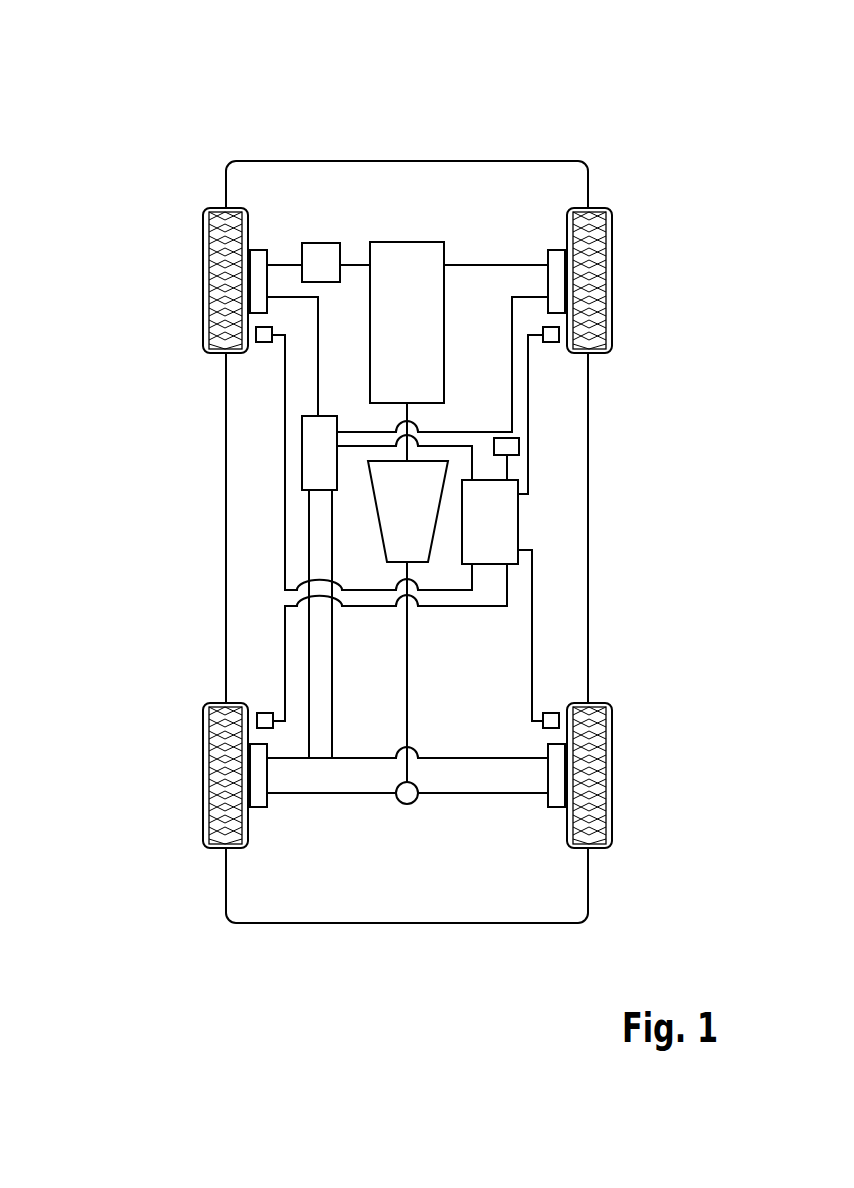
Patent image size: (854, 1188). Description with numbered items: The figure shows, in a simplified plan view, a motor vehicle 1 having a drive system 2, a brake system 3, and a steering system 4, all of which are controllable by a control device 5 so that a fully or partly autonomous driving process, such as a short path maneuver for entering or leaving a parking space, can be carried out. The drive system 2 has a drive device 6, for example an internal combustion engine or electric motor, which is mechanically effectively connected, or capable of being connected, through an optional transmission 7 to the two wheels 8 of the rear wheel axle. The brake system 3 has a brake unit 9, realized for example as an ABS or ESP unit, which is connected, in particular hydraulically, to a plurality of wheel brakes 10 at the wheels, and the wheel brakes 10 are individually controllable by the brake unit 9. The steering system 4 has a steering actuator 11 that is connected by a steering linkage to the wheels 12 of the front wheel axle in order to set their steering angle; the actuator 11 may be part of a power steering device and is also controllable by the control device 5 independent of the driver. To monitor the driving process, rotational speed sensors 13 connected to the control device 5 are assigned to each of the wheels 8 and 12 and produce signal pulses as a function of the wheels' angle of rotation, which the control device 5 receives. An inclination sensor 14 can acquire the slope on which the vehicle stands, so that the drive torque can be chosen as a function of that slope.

The motor vehicle 1 is at (124, 100).
The drive system 2 is at (466, 228).
The brake system 3 is at (268, 487).
The steering system 4 is at (355, 213).
The control device 5 is at (503, 520).
The drive device 6 is at (425, 350).
The transmission 7 is at (397, 507).
The wheels 8 is at (222, 765).
The brake unit 9 is at (315, 447).
The wheel brakes 10 is at (259, 265).
The steering actuator 11 is at (321, 265).
The wheels 12 is at (220, 270).
The rotational speed sensors 13 is at (263, 343).
The inclination sensor 14 is at (508, 446).